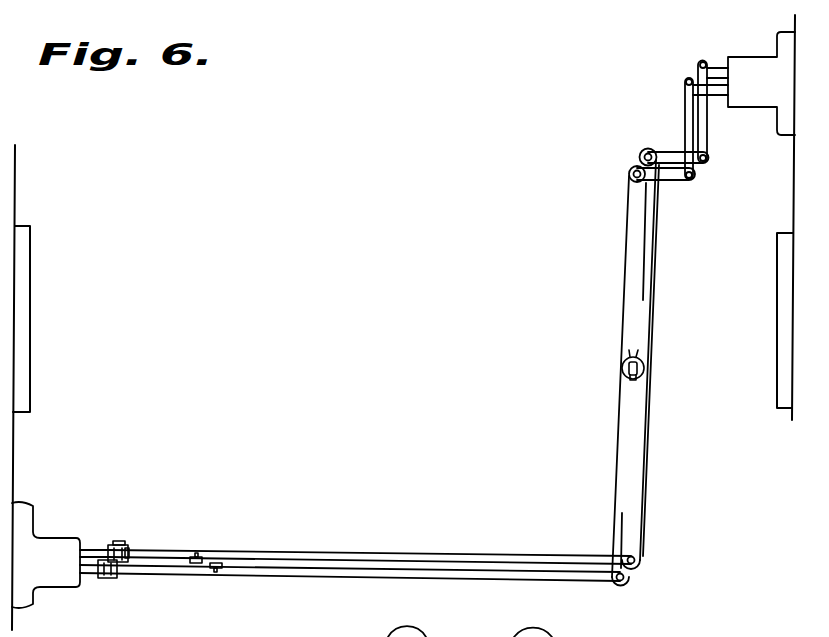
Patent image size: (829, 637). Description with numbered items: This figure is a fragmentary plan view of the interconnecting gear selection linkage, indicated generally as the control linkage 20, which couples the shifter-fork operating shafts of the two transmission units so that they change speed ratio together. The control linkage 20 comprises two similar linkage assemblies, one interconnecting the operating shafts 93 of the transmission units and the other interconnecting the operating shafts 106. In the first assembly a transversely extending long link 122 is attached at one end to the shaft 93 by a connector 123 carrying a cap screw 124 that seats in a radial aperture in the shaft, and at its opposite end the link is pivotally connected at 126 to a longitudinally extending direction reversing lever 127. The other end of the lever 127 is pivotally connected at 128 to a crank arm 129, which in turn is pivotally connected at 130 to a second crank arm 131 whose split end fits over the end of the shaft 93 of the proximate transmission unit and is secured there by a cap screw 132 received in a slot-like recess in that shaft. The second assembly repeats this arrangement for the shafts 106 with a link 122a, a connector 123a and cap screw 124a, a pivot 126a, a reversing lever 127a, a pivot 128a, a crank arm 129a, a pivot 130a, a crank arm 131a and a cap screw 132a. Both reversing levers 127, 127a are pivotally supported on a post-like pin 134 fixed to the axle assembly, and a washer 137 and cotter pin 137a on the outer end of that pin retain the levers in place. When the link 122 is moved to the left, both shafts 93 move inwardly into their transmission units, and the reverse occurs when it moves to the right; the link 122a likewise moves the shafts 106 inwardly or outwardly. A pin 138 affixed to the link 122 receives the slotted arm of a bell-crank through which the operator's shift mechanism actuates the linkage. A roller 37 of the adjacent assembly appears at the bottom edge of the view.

The control linkage 20 is at (465, 542).
The roller 37 is at (470, 628).
The operating shaft 93 is at (722, 62).
The operating shaft 106 is at (712, 100).
The long link 122 is at (295, 578).
The long link 122a is at (273, 551).
The connector 123 is at (114, 582).
The connector 123a is at (128, 547).
The cap screw 124 is at (112, 544).
The cap screw 124a is at (120, 541).
The pivotal connection 126 is at (630, 582).
The pivotal connection 126a is at (633, 556).
The direction reversing lever 127 is at (613, 525).
The direction reversing lever 127a is at (641, 443).
The pivotal connection 128 is at (645, 154).
The pivotal connection 128a is at (629, 173).
The crank arm 129 is at (670, 151).
The crank arm 129a is at (668, 181).
The pivotal connection 130 is at (708, 163).
The pivotal connection 130a is at (694, 181).
The crank arm 131 is at (707, 138).
The crank arm 131a is at (684, 113).
The cap screw 132 is at (703, 61).
The cap screw 132a is at (687, 78).
The pin 134 is at (622, 369).
The washer 137 is at (638, 366).
The cotter pin 137a is at (637, 380).
The pin 138 is at (217, 573).